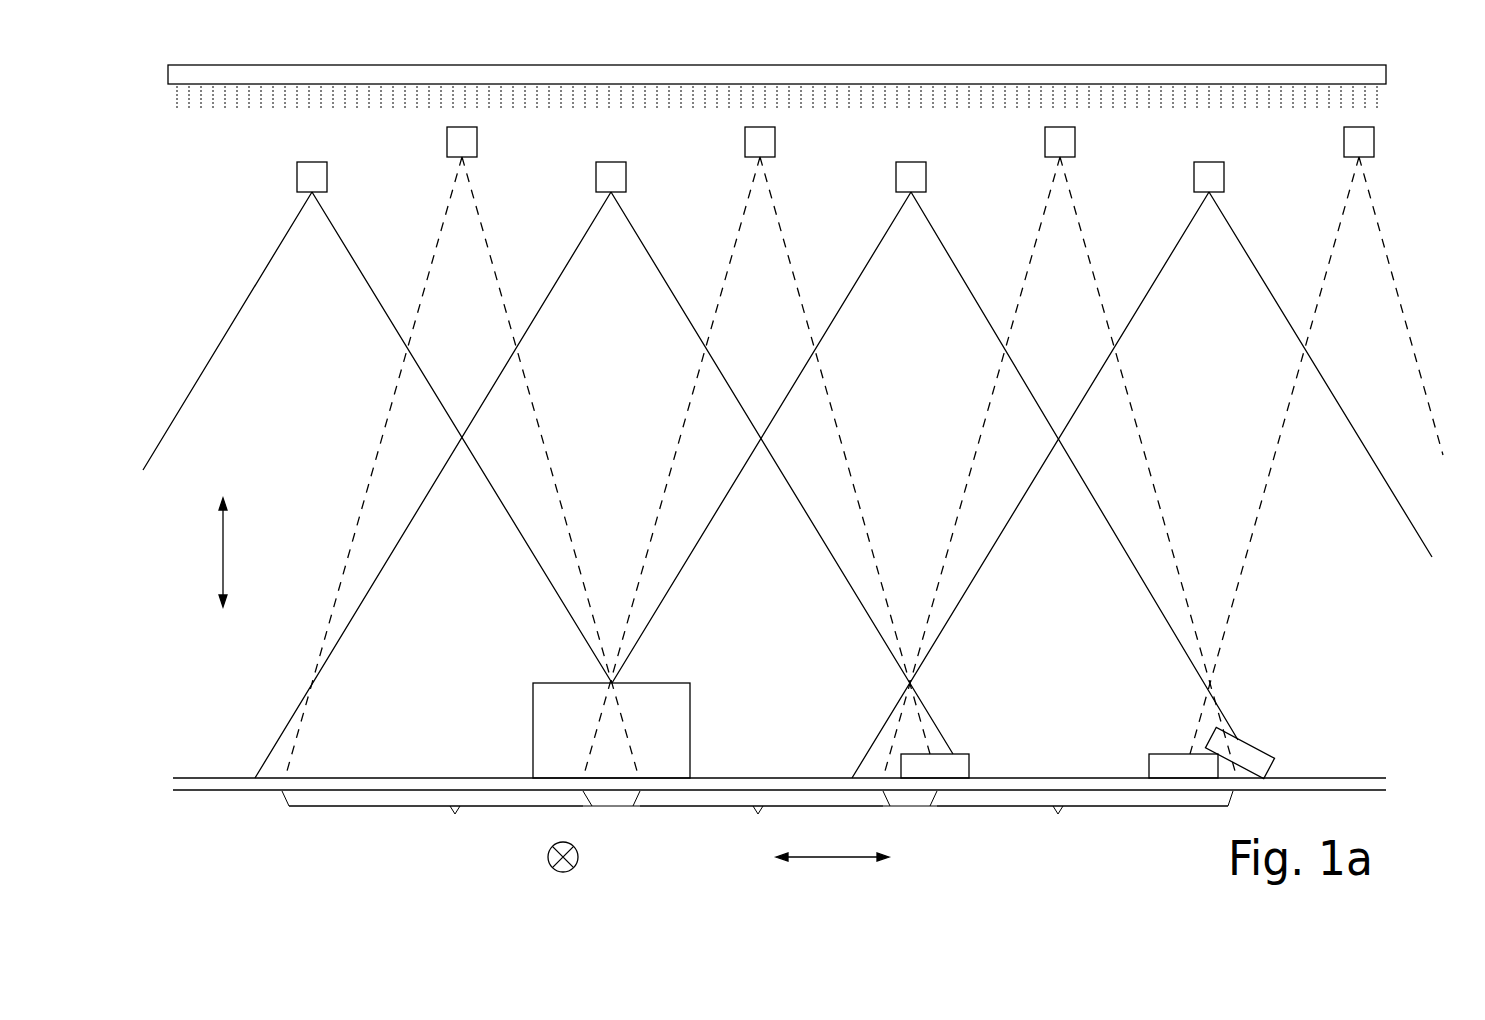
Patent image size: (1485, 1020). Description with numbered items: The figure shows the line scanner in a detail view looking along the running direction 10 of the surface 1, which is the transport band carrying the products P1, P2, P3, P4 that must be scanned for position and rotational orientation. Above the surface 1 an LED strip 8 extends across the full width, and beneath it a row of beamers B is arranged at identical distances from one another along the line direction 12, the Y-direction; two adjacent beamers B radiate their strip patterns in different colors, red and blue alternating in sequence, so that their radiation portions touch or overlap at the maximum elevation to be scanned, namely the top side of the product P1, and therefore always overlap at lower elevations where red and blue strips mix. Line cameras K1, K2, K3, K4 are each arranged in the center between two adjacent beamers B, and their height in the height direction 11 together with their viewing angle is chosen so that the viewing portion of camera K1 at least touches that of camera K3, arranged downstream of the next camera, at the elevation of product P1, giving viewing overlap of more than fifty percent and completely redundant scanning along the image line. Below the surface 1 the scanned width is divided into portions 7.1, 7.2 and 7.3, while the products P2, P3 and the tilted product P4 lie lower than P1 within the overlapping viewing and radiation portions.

The surface, transport band 1 is at (390, 779).
The portion 7.1 is at (436, 824).
The portion 7.2 is at (761, 824).
The portion 7.3 is at (1082, 824).
The LED strip 8 is at (680, 75).
The longitudinal direction, operational direction 10 is at (578, 857).
The height direction, viewing direction 11 is at (224, 550).
The line direction 12 is at (830, 858).
The camera K1 is at (377, 422).
The camera K2 is at (604, 470).
The camera K3 is at (925, 451).
The camera K4 is at (1142, 470).
The beamer B is at (864, 442).
The product P1 is at (611, 730).
The product P2 is at (935, 766).
The product P3 is at (1183, 766).
The product P4 is at (1240, 753).